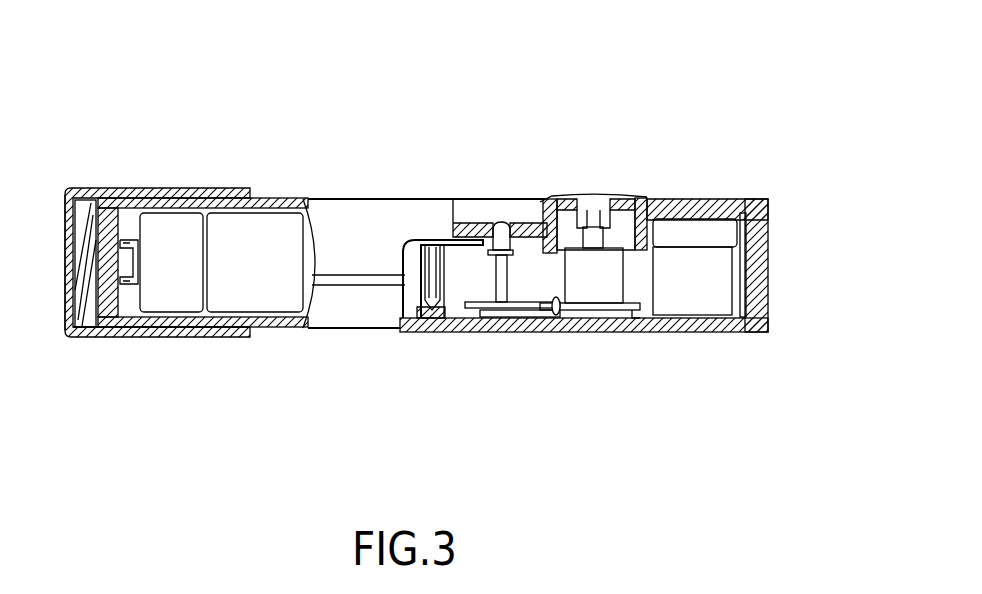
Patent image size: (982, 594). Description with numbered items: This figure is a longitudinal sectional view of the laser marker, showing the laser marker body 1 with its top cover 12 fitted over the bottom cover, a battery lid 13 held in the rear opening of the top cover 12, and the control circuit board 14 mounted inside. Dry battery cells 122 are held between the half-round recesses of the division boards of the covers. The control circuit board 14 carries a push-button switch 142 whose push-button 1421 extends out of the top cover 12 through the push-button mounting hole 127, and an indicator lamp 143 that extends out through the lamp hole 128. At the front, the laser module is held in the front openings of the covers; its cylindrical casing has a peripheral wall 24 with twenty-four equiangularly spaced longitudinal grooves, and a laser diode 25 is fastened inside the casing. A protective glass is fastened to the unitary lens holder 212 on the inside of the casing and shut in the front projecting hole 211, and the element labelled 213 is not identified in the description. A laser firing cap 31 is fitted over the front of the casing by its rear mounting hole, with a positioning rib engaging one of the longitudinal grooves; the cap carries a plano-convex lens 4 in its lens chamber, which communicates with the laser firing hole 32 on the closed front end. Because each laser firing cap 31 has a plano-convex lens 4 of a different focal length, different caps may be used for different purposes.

The laser marker body 1 is at (483, 335).
The plano-convex lens 4 is at (83, 190).
The top cover 12 is at (380, 210).
The battery lid 13 is at (769, 238).
The control circuit board 14 is at (585, 320).
The peripheral wall 24 is at (217, 190).
The laser diode 25 is at (285, 230).
The laser firing cap 31 is at (100, 335).
The laser firing hole 32 is at (70, 265).
The dry battery cells 122 is at (712, 333).
The push-button mounting hole 127 is at (643, 200).
The lamp hole 128 is at (504, 222).
The push-button switch 142 is at (612, 295).
The indicator lamp 143 is at (499, 222).
The front projecting hole 211 is at (112, 190).
The unitary lens holder 212 is at (135, 330).
The sleeve block 213 is at (130, 190).
The push-button 1421 is at (577, 196).